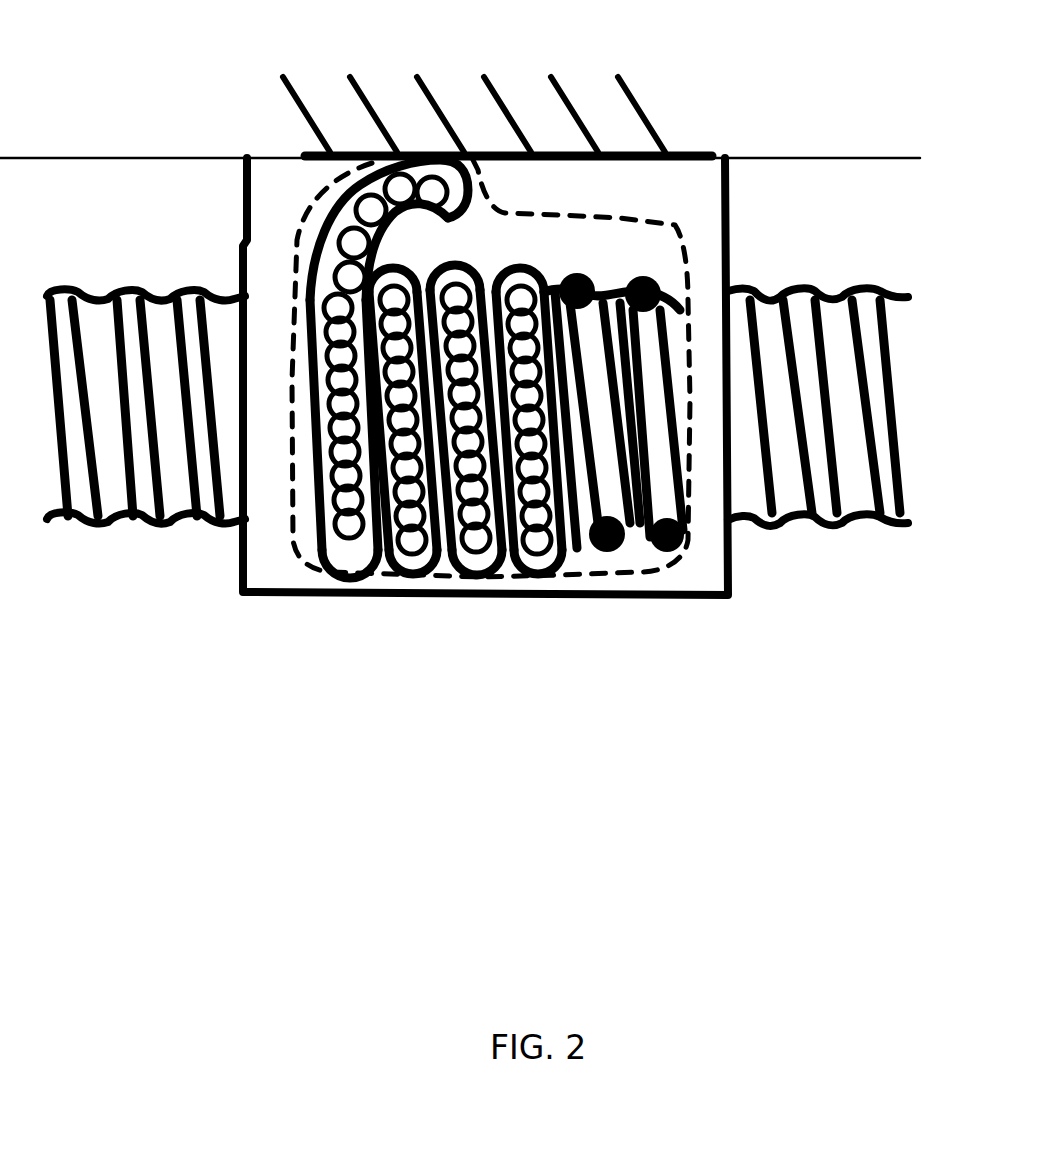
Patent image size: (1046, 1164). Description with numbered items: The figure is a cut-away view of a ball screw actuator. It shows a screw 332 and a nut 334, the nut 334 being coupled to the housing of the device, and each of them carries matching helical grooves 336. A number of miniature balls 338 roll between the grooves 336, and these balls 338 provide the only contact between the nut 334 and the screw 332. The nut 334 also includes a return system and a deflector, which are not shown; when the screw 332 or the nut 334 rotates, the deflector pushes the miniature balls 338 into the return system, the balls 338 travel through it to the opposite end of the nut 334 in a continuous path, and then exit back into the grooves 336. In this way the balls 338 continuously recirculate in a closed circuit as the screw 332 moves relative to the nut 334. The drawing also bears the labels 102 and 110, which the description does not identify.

The support surface 102 is at (155, 157).
The hook device 110 is at (330, 750).
The screw 332 is at (120, 289).
The nut 334 is at (287, 577).
The helical grooves 336 is at (647, 370).
The miniature balls 338 is at (470, 570).